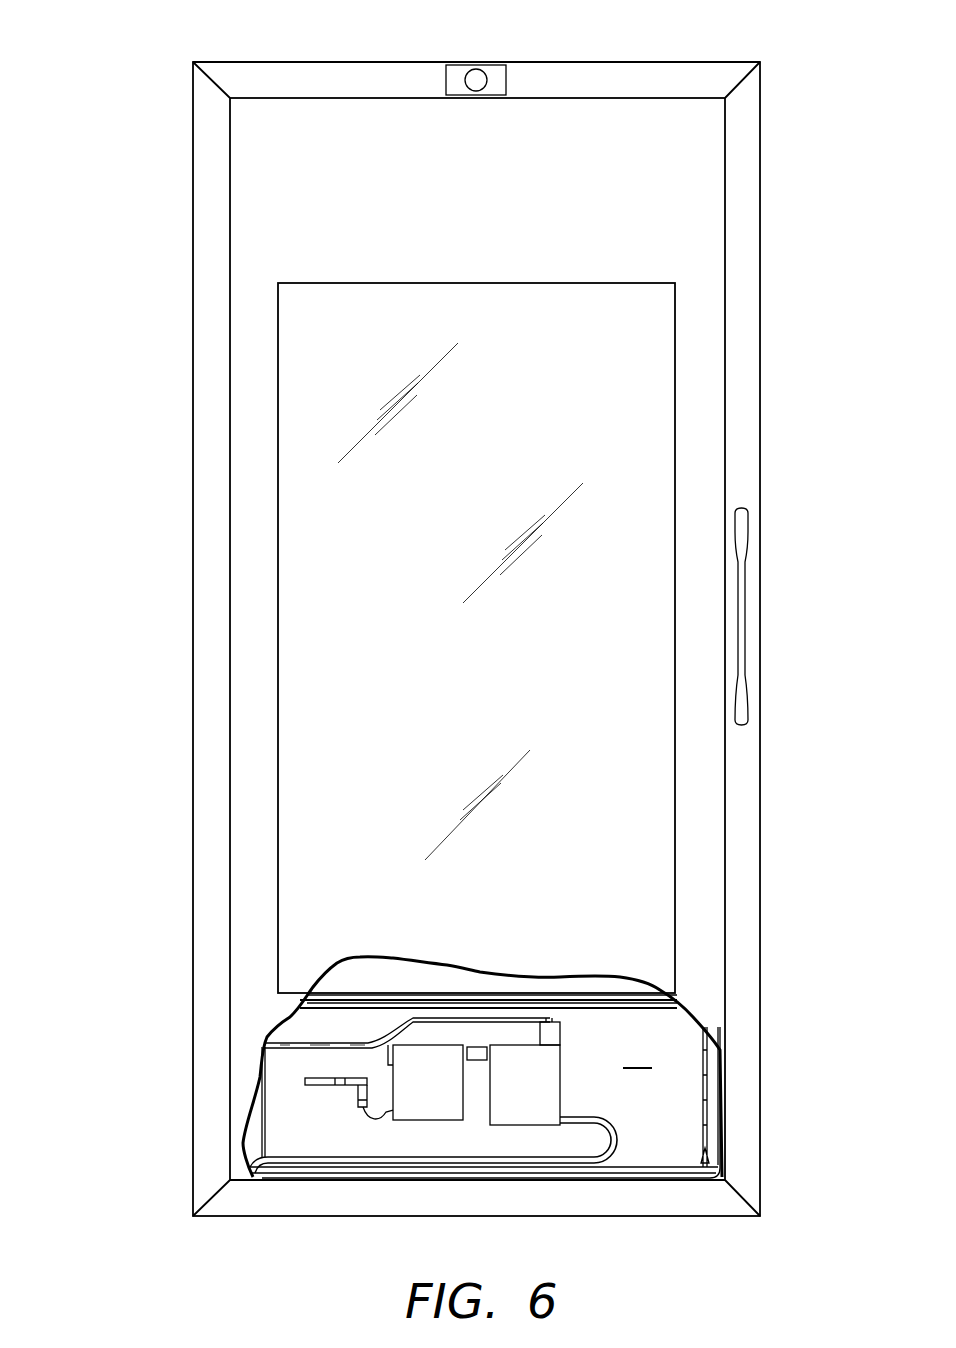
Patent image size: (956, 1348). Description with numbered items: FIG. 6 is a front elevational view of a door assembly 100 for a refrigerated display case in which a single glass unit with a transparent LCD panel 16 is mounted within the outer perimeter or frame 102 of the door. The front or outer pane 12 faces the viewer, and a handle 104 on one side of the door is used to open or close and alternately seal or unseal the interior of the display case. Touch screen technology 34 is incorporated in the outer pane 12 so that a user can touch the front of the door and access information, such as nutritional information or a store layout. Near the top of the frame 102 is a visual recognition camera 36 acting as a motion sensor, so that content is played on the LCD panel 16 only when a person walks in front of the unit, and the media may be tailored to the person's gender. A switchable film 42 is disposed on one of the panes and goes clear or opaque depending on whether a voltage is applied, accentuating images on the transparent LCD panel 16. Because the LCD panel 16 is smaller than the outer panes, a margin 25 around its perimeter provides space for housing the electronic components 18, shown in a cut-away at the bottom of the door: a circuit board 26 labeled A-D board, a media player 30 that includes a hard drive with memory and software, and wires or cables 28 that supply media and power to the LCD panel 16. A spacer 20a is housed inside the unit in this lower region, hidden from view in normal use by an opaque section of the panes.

The door assembly 100 is at (125, 84).
The outer perimeter or frame 102 is at (730, 72).
The visual recognition camera 36 is at (480, 80).
The switchable film 42 is at (660, 320).
The handle 104 is at (743, 615).
The touch screen technology 34 is at (537, 700).
The front pane 12 is at (705, 849).
The transparent LCD panel 16 is at (350, 977).
The spacer 20a is at (717, 1100).
The margin 25 is at (637, 1055).
The media player 30 is at (440, 1110).
The circuit board 26 is at (545, 1117).
The wires or cables 28 is at (270, 1047).
The electronic components 18 is at (422, 1194).